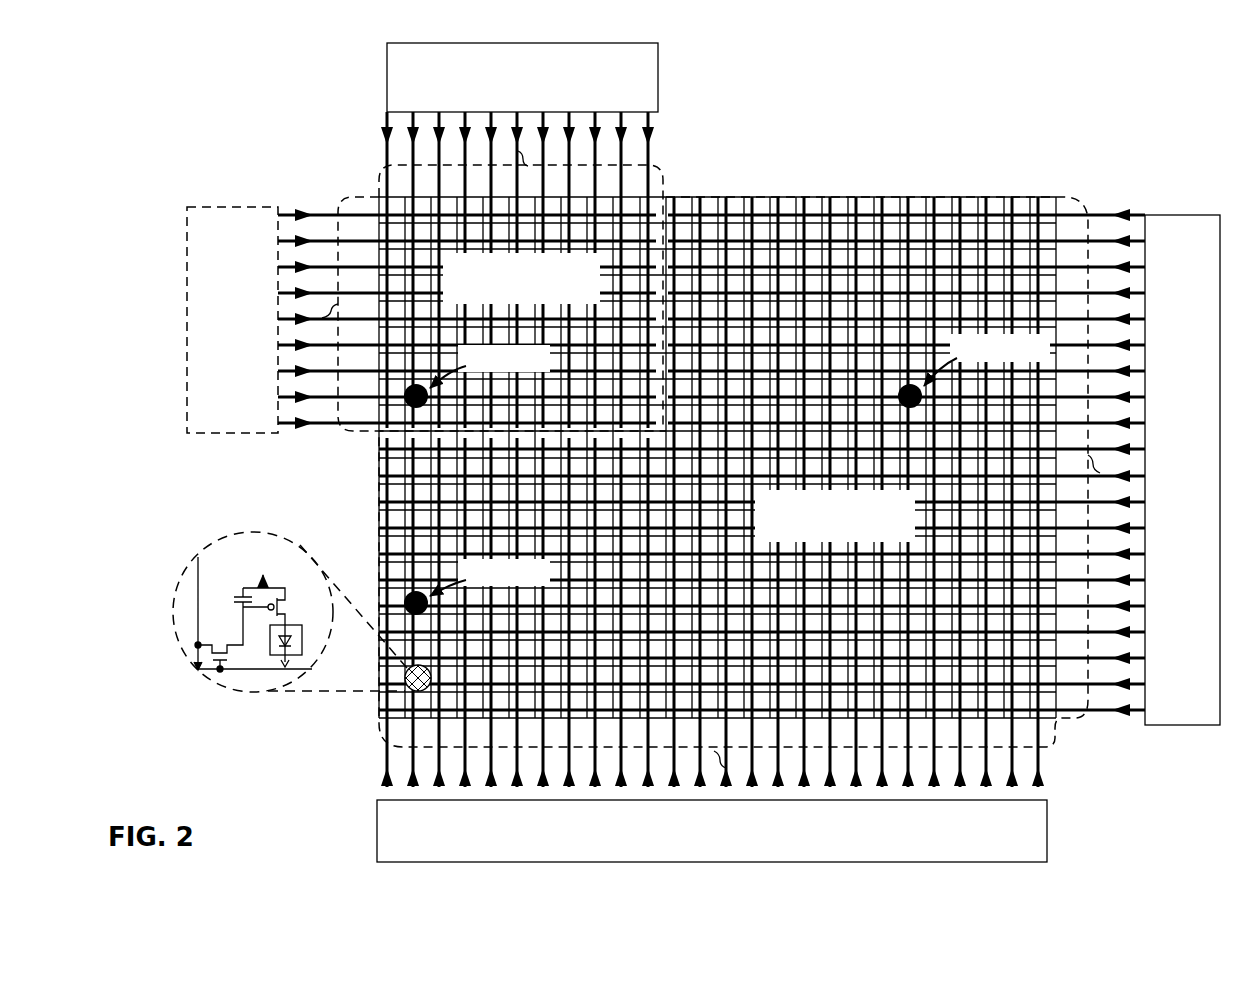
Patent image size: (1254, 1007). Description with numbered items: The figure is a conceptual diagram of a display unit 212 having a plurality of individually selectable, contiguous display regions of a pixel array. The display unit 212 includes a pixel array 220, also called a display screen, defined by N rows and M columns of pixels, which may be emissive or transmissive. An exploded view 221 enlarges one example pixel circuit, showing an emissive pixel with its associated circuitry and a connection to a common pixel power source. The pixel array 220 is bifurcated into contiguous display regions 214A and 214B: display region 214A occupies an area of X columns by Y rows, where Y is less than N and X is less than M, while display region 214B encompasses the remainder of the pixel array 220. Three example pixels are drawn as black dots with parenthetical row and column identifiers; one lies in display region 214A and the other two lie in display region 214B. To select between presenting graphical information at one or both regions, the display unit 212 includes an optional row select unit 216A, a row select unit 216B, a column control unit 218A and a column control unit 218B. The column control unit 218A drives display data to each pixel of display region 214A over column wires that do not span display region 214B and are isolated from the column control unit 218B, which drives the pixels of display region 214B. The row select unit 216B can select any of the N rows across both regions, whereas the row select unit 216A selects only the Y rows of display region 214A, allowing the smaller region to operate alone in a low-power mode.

The display unit 212 is at (198, 96).
The display region 214A is at (501, 301).
The display region 214B is at (813, 538).
The row select unit 216A is at (212, 341).
The row select unit 216B is at (1164, 495).
The column control unit 218A is at (503, 99).
The column control unit 218B is at (691, 852).
The pixel array 220 is at (975, 196).
The exploded view 221 is at (219, 544).